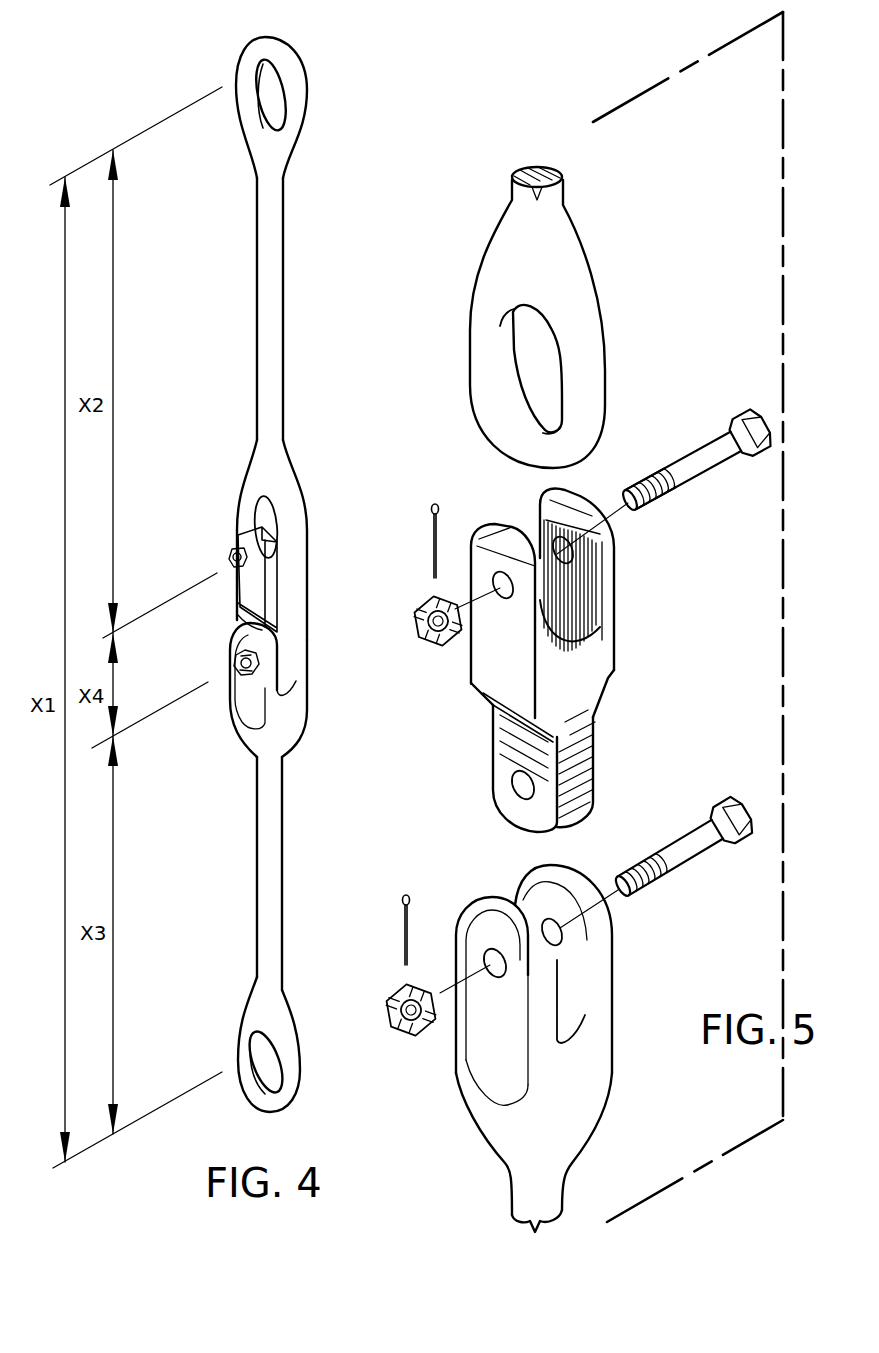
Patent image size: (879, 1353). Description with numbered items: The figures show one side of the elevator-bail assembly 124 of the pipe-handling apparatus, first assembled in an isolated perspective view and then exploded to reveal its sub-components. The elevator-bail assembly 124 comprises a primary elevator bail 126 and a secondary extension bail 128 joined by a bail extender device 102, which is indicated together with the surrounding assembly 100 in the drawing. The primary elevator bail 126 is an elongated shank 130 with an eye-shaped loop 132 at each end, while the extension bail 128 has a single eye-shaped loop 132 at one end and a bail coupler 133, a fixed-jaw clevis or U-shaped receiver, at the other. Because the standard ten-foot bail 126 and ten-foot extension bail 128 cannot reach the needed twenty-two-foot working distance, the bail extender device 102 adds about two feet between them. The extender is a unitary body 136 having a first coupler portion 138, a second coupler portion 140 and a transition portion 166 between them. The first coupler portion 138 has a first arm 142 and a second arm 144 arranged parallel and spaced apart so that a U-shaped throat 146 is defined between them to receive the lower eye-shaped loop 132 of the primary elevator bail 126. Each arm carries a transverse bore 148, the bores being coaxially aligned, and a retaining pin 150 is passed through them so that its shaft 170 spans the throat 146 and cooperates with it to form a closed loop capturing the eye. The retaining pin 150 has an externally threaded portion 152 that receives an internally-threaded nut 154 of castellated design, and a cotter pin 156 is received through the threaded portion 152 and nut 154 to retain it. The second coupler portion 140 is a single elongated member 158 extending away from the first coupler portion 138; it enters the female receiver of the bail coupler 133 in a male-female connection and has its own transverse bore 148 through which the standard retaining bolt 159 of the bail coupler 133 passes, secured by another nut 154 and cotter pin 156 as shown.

In FIG. 4, the connection assembly 100 is at (218, 488).
In FIG. 5, the connection assembly 100 is at (462, 730).
In FIG. 4, the bail extender device 102 is at (222, 525).
In FIG. 5, the bail extender device 102 is at (462, 766).
In FIG. 4, the elevator-bail assembly 124 is at (308, 216).
In FIG. 4, the primary elevator bail 126 is at (320, 258).
In FIG. 5, the primary elevator bail 126 is at (585, 187).
In FIG. 4, the secondary extension bail 128 is at (240, 881).
In FIG. 5, the secondary extension bail 128 is at (494, 1200).
In FIG. 4, the elongated shank 130 is at (284, 311).
In FIG. 4, the eye-shaped loop 132 is at (294, 128).
In FIG. 5, the eye-shaped loop 132 is at (592, 339).
In FIG. 4, the bail coupler 133 is at (233, 717).
In FIG. 5, the bail coupler 133 is at (597, 1065).
In FIG. 5, the unitary body 136 is at (638, 710).
In FIG. 5, the first coupler portion 138 is at (635, 598).
In FIG. 5, the second coupler portion 140 is at (638, 762).
In FIG. 5, the first arm 142 is at (475, 508).
In FIG. 5, the second arm 144 is at (635, 567).
In FIG. 5, the U-shaped throat 146 is at (602, 645).
In FIG. 5, the transverse bore 148 is at (602, 616).
In FIG. 4, the retaining pin 150 is at (232, 559).
In FIG. 5, the retaining pin 150 is at (714, 470).
In FIG. 5, the externally threaded portion 152 is at (641, 489).
In FIG. 4, the nut 154 is at (233, 602).
In FIG. 5, the nut 154 is at (442, 650).
In FIG. 5, the cotter pin 156 is at (432, 558).
In FIG. 5, the elongated member 158 is at (585, 773).
In FIG. 4, the retaining bolt 159 is at (233, 664).
In FIG. 5, the retaining bolt 159 is at (688, 867).
In FIG. 5, the transition portion 166 is at (638, 685).
In FIG. 5, the shaft 170 is at (672, 475).